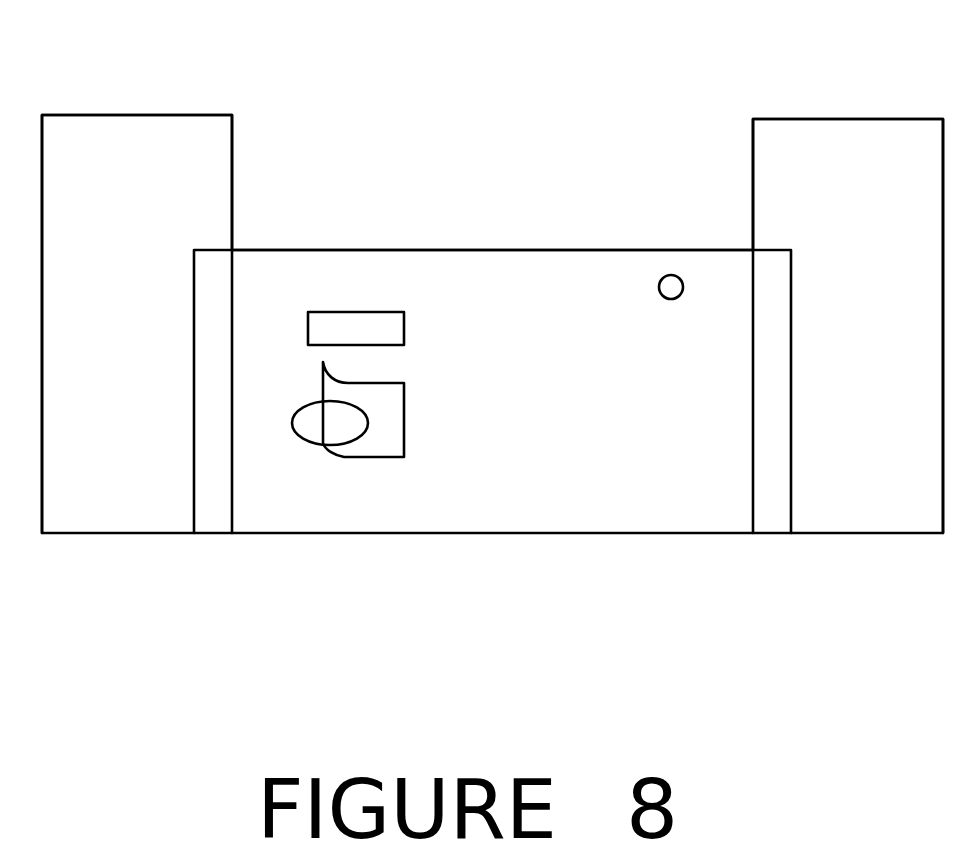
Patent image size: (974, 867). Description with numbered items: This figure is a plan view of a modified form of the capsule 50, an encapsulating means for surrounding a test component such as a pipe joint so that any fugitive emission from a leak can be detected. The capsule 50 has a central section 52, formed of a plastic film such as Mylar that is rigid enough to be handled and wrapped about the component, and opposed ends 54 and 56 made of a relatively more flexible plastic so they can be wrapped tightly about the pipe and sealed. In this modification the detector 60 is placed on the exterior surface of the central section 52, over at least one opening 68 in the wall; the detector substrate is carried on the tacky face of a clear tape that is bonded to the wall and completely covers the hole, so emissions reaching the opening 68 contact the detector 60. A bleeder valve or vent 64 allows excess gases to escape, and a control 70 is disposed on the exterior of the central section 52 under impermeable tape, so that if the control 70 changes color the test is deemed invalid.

The capsule 50 is at (427, 553).
The central section 52 is at (385, 273).
The opposed end 54 is at (198, 157).
The opposed end 56 is at (803, 150).
The detector 60 is at (393, 404).
The bleeder valve or vent 64 is at (671, 287).
The opening 68 is at (302, 425).
The control 70 is at (385, 328).